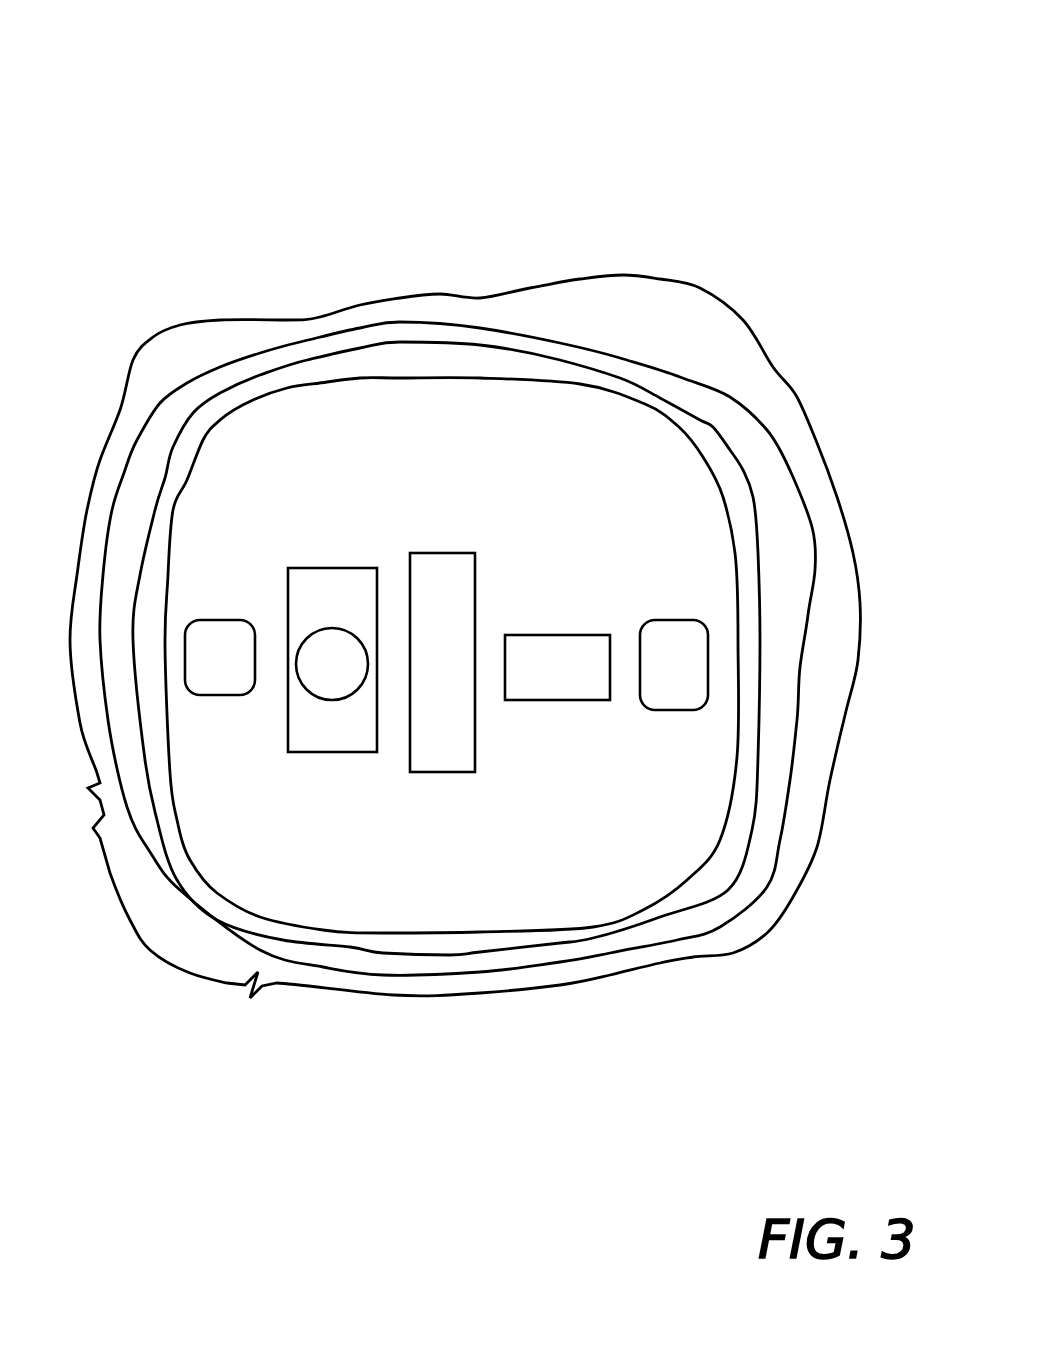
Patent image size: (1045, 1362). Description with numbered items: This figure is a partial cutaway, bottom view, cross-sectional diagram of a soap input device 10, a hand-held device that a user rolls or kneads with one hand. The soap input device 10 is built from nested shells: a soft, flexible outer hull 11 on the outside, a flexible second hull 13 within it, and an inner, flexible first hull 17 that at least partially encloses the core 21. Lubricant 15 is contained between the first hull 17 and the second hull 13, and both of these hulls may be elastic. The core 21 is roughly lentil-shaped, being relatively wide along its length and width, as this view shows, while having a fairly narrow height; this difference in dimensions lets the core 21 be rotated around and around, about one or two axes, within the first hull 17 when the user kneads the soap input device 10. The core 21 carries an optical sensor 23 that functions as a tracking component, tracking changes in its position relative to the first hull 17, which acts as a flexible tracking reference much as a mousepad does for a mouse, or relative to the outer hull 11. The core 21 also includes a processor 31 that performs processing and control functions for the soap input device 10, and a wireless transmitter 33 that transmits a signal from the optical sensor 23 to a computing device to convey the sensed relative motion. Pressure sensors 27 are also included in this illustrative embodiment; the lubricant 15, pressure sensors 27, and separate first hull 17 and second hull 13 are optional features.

The soap input device 10 is at (120, 105).
The outer hull 11 is at (800, 390).
The second hull 13 is at (230, 350).
The lubricant 15 is at (799, 582).
The first hull 17 is at (341, 338).
The core 21 is at (503, 362).
The optical sensor 23 is at (356, 552).
The pressure sensors 27 is at (223, 600).
The processor 31 is at (448, 534).
The wireless transmitter 33 is at (565, 617).